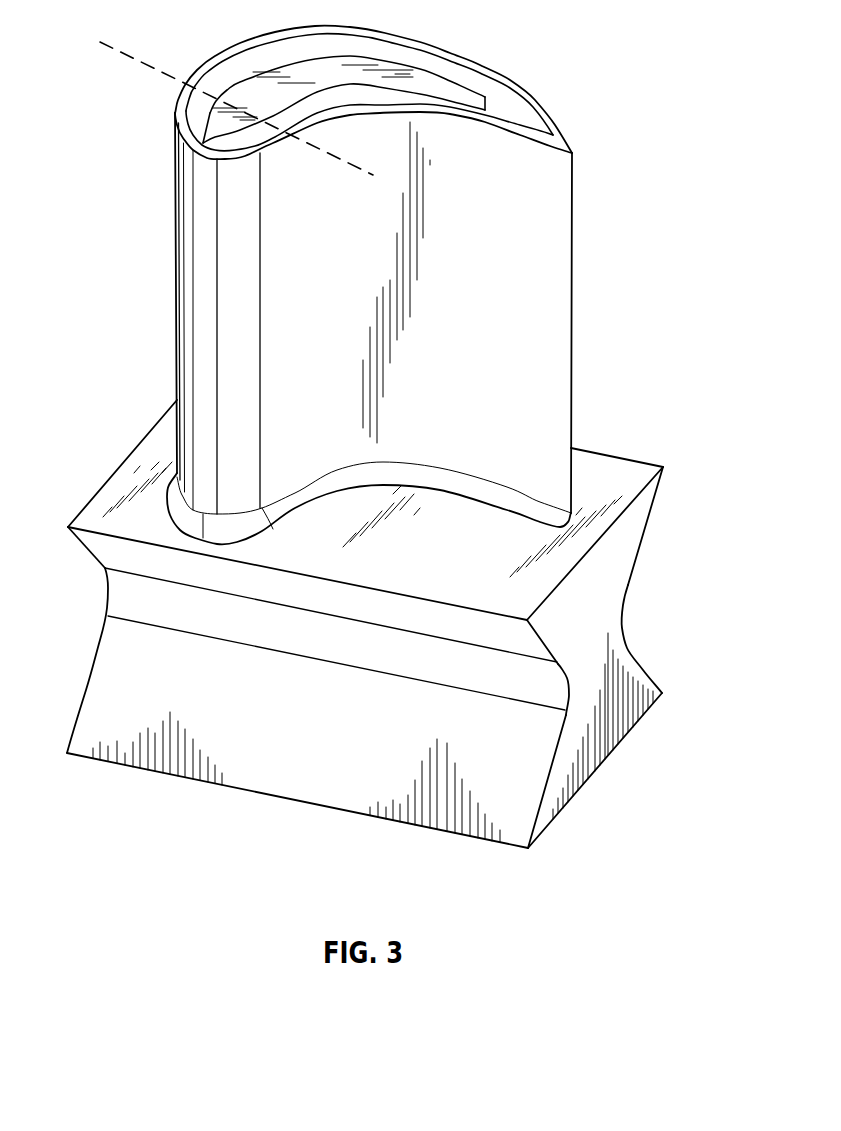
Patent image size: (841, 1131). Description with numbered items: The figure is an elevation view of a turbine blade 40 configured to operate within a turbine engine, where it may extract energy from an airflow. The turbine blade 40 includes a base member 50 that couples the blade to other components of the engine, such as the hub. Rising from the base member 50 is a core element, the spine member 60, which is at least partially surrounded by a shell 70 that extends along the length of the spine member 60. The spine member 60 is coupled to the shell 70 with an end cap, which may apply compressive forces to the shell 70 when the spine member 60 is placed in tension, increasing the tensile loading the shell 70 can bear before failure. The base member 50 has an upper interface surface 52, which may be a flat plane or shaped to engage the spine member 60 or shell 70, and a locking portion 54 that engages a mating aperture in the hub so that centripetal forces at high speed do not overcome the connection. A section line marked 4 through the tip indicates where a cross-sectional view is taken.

The turbine blade 40 is at (120, 342).
The base member 50 is at (690, 507).
The interface surface 52 is at (634, 464).
The locking portion 54 is at (683, 636).
The spine member 60 is at (230, 86).
The shell 70 is at (472, 54).
The section line 4- 4 is at (100, 42).